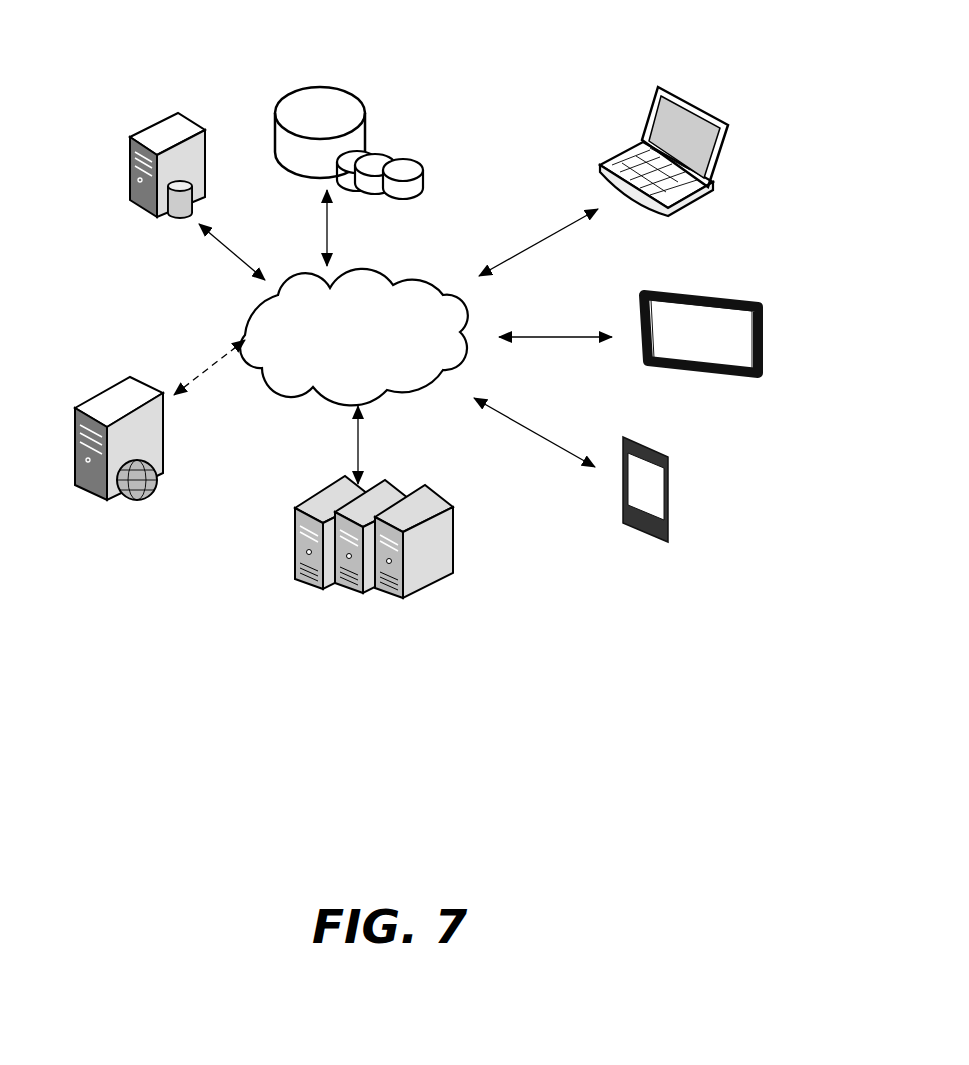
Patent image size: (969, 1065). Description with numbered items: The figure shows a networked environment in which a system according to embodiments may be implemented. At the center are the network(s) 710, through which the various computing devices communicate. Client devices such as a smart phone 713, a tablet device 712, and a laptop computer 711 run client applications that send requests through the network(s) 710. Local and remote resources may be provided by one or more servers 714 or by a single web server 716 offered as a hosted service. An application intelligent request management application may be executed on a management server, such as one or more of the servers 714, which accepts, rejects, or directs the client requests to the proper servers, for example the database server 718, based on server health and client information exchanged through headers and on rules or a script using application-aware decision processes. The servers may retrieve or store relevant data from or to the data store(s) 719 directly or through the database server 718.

The network(s) 710 is at (363, 257).
The laptop computer 711 is at (700, 88).
The tablet device 712 is at (737, 270).
The smart phone 713 is at (679, 455).
The servers 714 is at (325, 488).
The web server 716 is at (98, 388).
The database server 718 is at (170, 232).
The data store(s) 719 is at (337, 66).